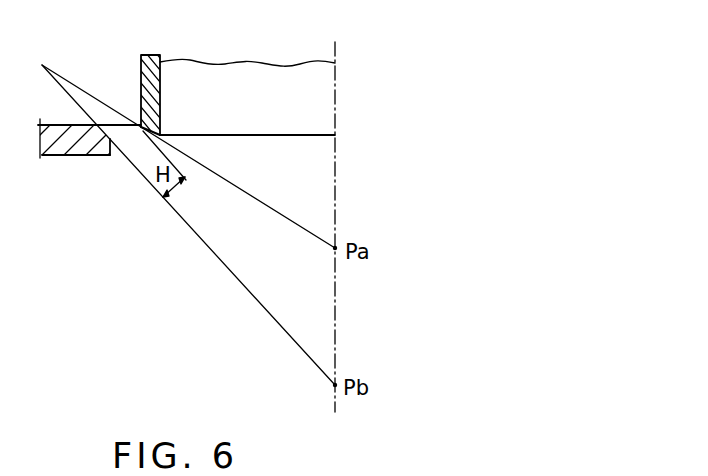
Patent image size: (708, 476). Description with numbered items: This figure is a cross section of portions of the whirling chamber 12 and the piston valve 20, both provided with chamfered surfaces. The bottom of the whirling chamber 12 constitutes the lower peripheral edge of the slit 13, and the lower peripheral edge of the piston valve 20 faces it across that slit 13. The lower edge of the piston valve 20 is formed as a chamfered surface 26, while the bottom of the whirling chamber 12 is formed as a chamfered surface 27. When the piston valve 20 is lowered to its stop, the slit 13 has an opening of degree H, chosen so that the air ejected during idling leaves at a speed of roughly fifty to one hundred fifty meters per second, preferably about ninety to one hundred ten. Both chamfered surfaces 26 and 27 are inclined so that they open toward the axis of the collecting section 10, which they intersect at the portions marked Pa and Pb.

The collecting section 10 is at (318, 192).
The whirling chamber 12 is at (82, 152).
The slit 13 is at (134, 115).
The piston valve 20 is at (160, 80).
The chamfered surface 26 is at (148, 137).
The chamfered surface 27 is at (105, 132).